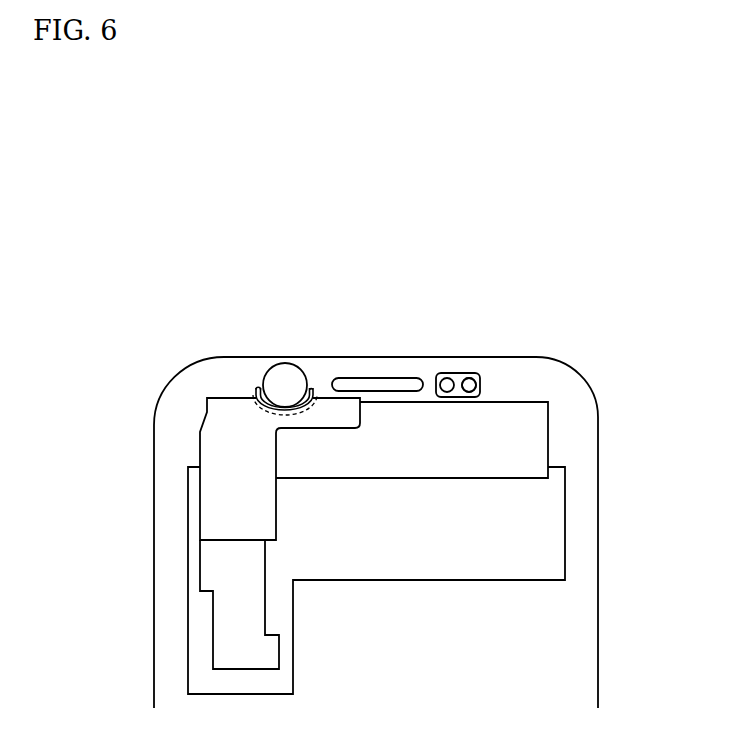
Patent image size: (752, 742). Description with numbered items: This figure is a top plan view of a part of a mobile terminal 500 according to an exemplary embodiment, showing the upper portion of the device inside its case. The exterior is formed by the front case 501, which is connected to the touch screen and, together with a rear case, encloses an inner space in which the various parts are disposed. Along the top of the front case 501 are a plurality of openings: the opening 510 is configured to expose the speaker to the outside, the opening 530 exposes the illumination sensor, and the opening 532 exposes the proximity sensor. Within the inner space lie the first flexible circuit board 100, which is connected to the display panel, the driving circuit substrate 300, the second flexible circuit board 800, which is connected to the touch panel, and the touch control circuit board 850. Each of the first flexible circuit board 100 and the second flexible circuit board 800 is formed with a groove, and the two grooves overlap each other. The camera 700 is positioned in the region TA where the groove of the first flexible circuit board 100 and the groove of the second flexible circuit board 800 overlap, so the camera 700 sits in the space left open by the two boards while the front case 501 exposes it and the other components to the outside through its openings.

The first flexible circuit board 100 is at (504, 428).
The driving circuit substrate 300 is at (534, 532).
The mobile terminal 500 is at (378, 343).
The front case 501 is at (580, 397).
The opening 510 is at (352, 376).
The opening 530 is at (447, 377).
The opening 532 is at (469, 378).
The camera 700 is at (263, 364).
The second flexible circuit board 800 is at (198, 442).
The touch control circuit board 850 is at (213, 577).
The region TA is at (253, 388).